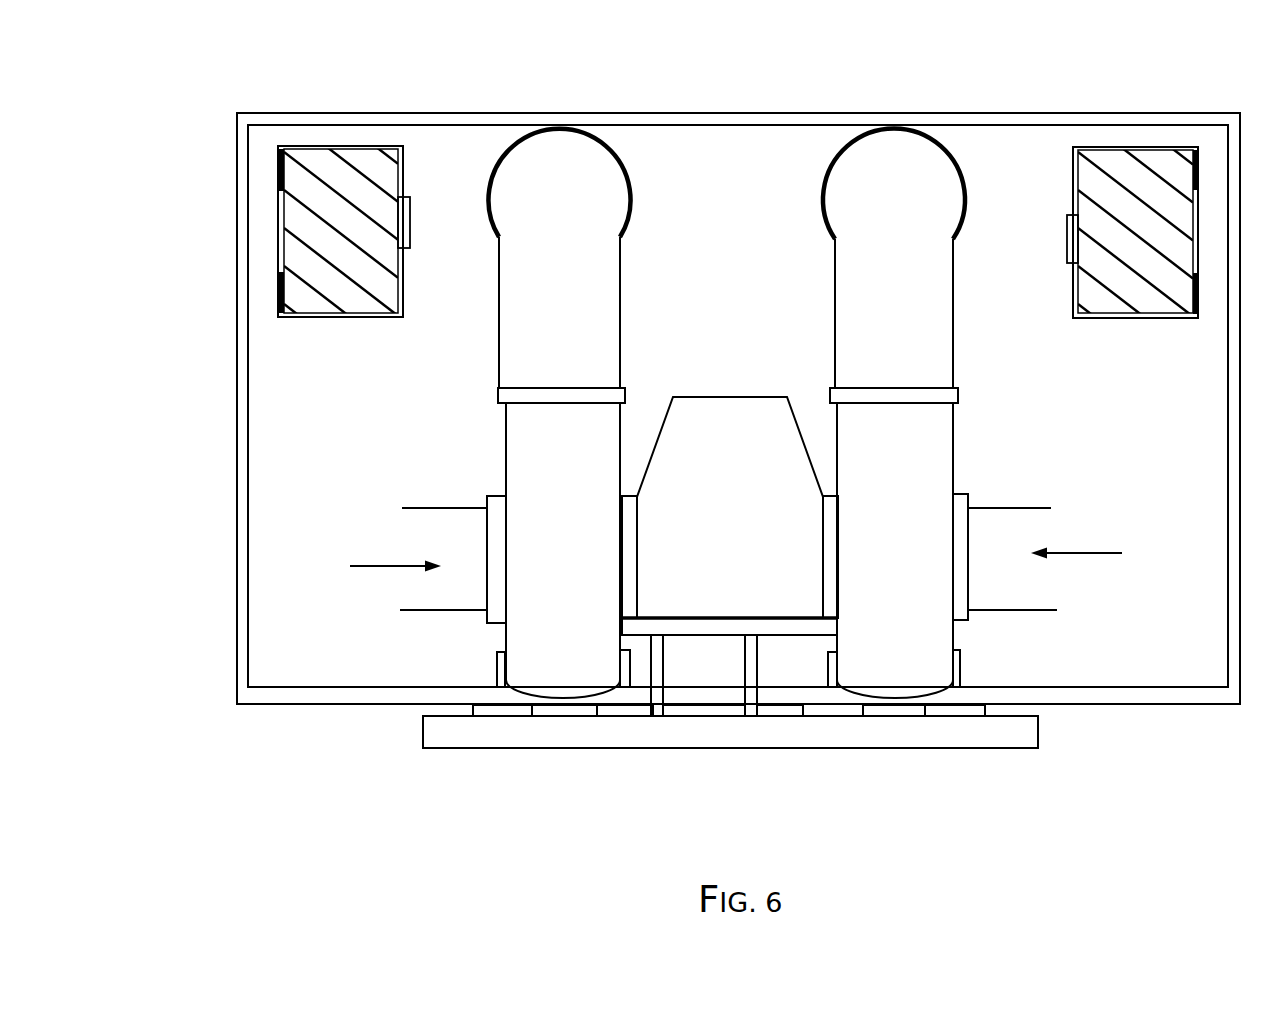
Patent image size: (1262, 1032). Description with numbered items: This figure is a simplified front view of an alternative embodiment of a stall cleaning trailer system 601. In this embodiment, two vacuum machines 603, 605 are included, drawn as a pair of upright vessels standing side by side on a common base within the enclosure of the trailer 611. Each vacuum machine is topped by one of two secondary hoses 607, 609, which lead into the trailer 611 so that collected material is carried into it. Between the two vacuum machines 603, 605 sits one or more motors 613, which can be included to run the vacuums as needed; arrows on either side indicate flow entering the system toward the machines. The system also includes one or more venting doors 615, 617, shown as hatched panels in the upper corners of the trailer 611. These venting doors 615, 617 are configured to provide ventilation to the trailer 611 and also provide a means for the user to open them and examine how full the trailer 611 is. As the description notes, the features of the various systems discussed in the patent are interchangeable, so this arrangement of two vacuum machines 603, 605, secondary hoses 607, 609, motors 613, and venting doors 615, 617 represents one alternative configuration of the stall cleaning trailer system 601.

The stall cleaning trailer system 601 is at (189, 78).
The vacuum machine 603 is at (506, 455).
The vacuum machine 605 is at (953, 449).
The secondary hose 607 is at (500, 372).
The secondary hose 609 is at (953, 322).
The trailer 611 is at (750, 113).
The motor 613 is at (713, 397).
The venting door 615 is at (342, 148).
The venting door 617 is at (1148, 146).